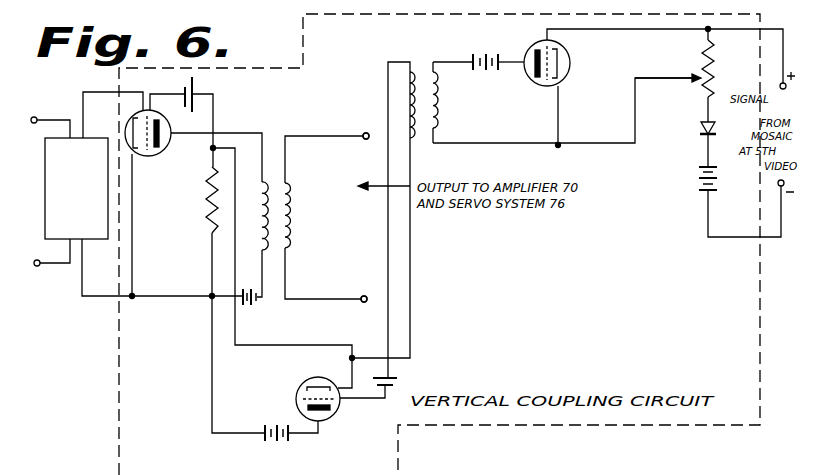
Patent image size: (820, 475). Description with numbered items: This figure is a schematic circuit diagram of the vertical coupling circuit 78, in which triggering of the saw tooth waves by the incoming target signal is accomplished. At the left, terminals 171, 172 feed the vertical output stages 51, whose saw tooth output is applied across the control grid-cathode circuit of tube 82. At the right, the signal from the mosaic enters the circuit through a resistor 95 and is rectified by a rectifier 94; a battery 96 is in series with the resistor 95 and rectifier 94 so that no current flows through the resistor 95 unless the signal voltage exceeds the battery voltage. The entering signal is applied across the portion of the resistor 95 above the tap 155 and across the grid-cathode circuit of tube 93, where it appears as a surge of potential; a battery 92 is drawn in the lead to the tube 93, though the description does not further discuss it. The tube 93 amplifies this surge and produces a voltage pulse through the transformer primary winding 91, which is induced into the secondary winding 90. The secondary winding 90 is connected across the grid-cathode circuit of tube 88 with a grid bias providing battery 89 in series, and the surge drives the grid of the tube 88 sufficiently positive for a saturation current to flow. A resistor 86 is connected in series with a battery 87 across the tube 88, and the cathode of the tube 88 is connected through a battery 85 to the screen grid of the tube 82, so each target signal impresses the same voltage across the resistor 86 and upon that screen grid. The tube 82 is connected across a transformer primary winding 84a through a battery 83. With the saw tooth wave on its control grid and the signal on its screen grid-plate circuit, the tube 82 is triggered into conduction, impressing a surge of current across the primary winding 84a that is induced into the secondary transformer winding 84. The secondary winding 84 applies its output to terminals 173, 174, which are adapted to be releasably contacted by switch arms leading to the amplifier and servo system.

The vertical output stages 51 is at (90, 240).
The vertical coupling circuit 78 is at (706, 425).
The tube 82 is at (127, 121).
The battery 83 is at (255, 305).
The secondary transformer winding 84 is at (297, 219).
The transformer primary winding 84a is at (264, 252).
The battery 85 is at (200, 97).
The resistor 86 is at (210, 195).
The battery 87 is at (276, 445).
The tube 88 is at (337, 415).
The grid bias providing battery 89 is at (397, 381).
The secondary winding 90 is at (406, 92).
The transformer primary winding 91 is at (443, 108).
The battery 92 is at (497, 56).
The tube 93 is at (570, 76).
The rectifier 94 is at (716, 130).
The resistor 95 is at (712, 50).
The battery 96 is at (716, 181).
The tap 155 is at (701, 86).
The terminal 171 is at (66, 97).
The terminal 172 is at (34, 277).
The terminal 173 is at (366, 139).
The terminal 174 is at (368, 284).